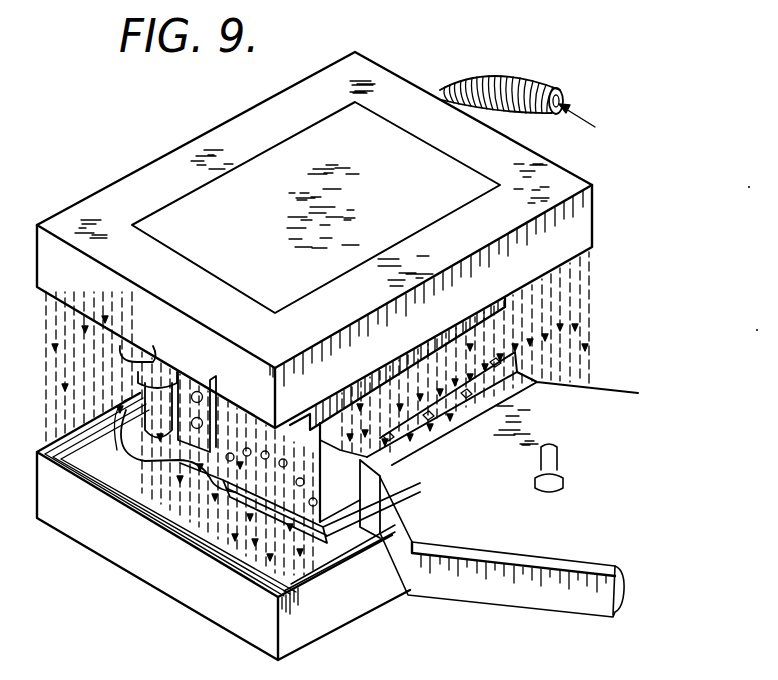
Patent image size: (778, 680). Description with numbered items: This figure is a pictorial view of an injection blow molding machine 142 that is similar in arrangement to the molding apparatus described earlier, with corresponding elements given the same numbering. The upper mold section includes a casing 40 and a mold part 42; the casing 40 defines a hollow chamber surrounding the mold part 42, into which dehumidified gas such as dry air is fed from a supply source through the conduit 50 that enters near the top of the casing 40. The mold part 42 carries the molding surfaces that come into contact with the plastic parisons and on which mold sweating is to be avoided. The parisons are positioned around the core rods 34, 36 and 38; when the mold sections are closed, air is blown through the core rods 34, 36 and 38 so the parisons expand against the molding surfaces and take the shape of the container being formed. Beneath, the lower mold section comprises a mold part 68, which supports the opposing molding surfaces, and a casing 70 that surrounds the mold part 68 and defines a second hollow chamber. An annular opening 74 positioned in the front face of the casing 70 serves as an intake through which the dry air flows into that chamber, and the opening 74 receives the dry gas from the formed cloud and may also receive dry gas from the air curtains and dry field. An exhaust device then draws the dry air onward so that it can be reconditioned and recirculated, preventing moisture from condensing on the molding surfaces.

The casing 40 is at (583, 223).
The conduit 50 is at (512, 73).
The injection blow molding machine 142 is at (601, 168).
The mold part 42 is at (307, 437).
The core rod 34 is at (342, 458).
The core rod 36 is at (372, 442).
The core rod 38 is at (427, 417).
The annular opening 74 is at (200, 543).
The mold part 68 is at (300, 493).
The casing 70 is at (392, 597).